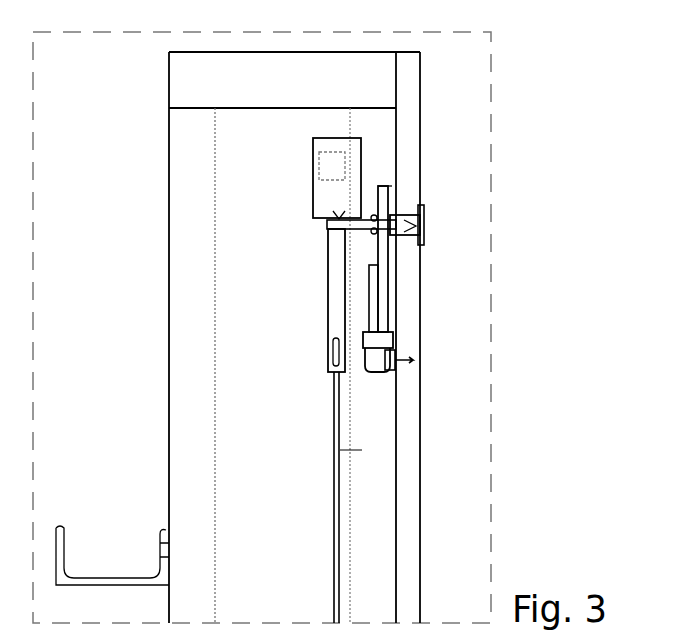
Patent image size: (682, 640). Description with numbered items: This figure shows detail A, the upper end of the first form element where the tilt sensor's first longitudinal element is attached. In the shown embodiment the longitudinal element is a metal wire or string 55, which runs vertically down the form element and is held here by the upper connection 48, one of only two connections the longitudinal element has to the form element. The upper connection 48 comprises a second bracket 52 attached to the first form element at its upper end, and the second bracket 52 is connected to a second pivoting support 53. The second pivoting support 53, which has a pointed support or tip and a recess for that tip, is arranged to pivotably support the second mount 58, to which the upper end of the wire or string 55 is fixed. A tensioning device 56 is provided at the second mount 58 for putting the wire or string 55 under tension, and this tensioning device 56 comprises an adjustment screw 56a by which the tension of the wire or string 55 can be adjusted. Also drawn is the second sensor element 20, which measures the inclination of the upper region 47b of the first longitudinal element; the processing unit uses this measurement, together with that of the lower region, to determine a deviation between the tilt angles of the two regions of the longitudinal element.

The second sensor element 20 is at (345, 153).
The upper connection 48 is at (380, 188).
The second pivoting support 53 is at (329, 220).
The second bracket 52 is at (424, 216).
The second mount 58 is at (338, 312).
The tensioning device 56 is at (396, 330).
The adjustment screw 56a is at (396, 342).
The upper region of the first longitudinal element 47b is at (352, 452).
The wire or string 55 is at (338, 510).